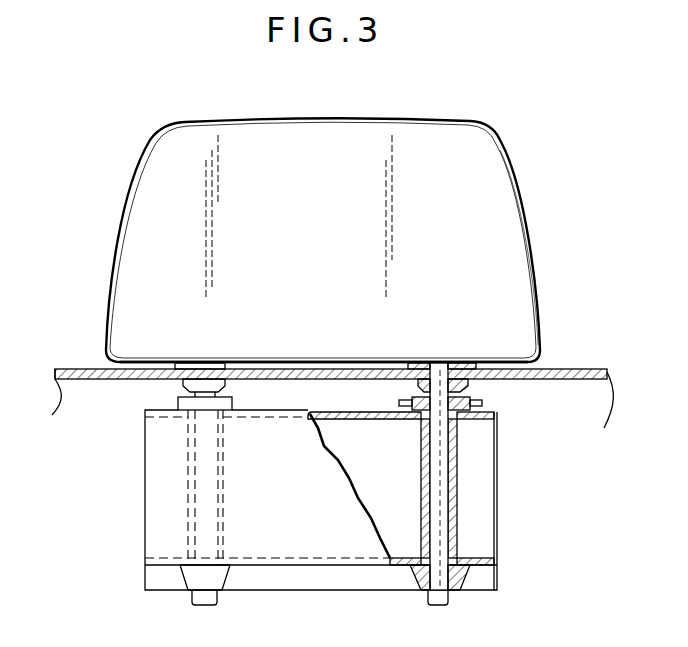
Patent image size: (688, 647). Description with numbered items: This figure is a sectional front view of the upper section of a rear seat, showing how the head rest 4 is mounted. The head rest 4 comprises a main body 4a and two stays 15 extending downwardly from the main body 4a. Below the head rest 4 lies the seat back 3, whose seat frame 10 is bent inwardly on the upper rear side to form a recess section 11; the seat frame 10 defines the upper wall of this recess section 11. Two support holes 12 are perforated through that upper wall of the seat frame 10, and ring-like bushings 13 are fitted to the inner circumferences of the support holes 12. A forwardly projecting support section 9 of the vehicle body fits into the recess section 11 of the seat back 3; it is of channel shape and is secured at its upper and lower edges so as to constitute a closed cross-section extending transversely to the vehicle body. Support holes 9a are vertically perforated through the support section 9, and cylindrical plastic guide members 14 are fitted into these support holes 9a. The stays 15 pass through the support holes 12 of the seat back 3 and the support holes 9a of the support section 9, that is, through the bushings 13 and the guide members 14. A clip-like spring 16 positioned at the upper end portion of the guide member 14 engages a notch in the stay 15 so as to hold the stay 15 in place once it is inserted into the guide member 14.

The seat back 3 is at (577, 363).
The head rest 4 is at (182, 114).
The main body 4a is at (505, 212).
The support section 9 is at (160, 498).
The support holes 9a is at (238, 404).
The seat frame 10 is at (68, 369).
The recess section 11 is at (334, 392).
The support holes 12 is at (213, 363).
The bushings 13 is at (183, 363).
The guide members 14 is at (223, 513).
The stays 15 is at (206, 470).
The spring 16 is at (482, 402).